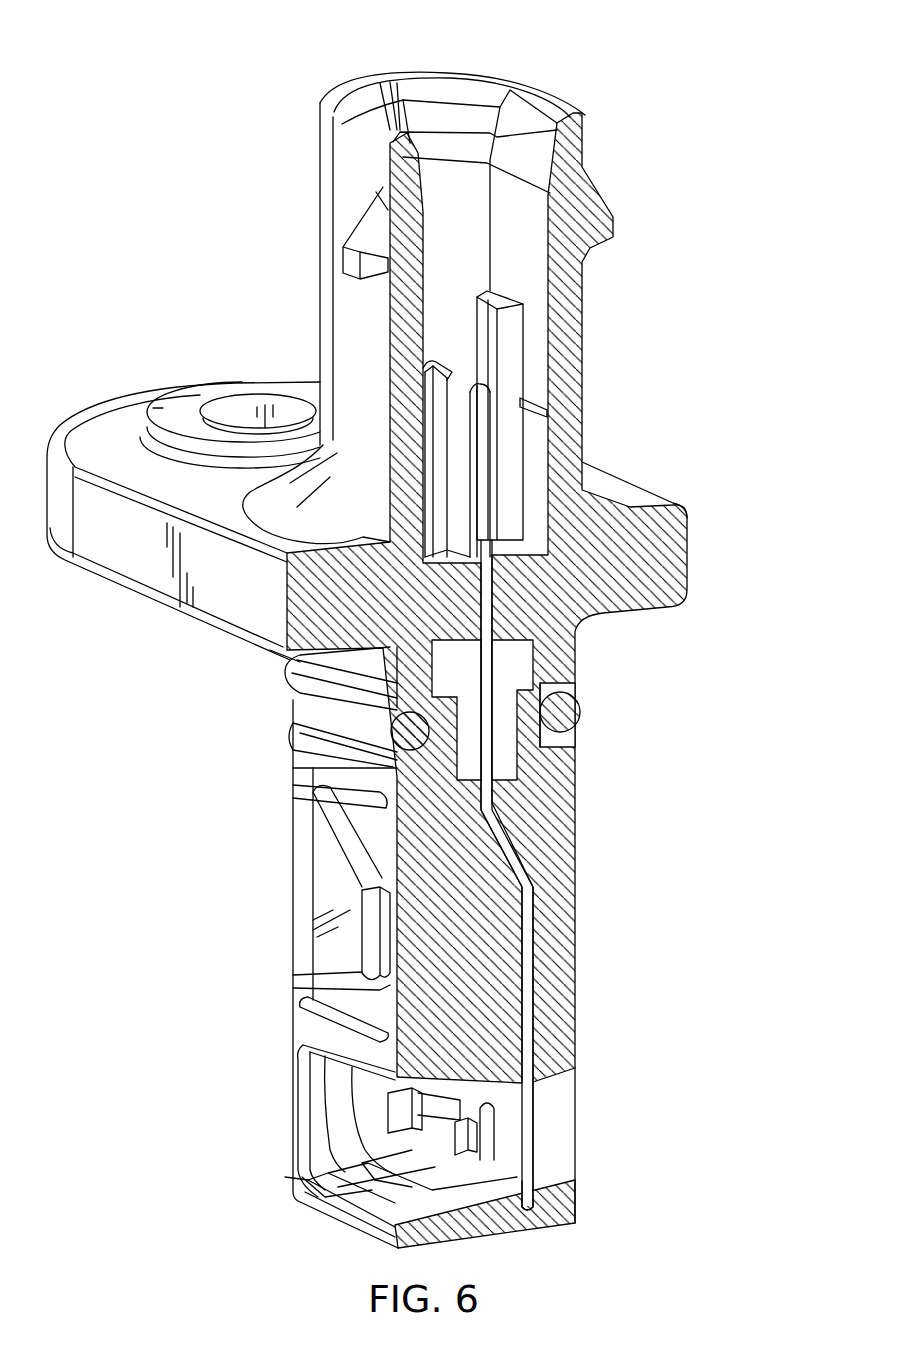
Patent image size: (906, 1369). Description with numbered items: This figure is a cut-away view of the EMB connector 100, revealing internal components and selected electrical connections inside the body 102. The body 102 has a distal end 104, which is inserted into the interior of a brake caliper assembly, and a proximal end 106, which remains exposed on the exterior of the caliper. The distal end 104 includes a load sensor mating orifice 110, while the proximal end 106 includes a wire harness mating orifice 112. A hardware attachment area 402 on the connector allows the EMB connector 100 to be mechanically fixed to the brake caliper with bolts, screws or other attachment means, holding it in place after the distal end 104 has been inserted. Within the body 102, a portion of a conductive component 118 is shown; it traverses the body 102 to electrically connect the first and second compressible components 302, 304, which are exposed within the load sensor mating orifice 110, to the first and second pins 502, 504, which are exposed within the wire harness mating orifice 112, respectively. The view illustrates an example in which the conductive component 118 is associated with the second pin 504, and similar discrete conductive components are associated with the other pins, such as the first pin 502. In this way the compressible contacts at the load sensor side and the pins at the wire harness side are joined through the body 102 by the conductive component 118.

The EMB connector 100 is at (176, 121).
The body 102 is at (660, 533).
The distal end 104 is at (292, 1196).
The proximal end 106 is at (330, 97).
The load sensor mating orifice 110 is at (364, 1078).
The wire harness mating orifice 112 is at (469, 204).
The conductive component 118 is at (525, 945).
The first compressible component 302 is at (398, 1137).
The second compressible component 304 is at (362, 1218).
The hardware attachment area 402 is at (238, 413).
The first pin 502 is at (430, 366).
The second pin 504 is at (482, 457).